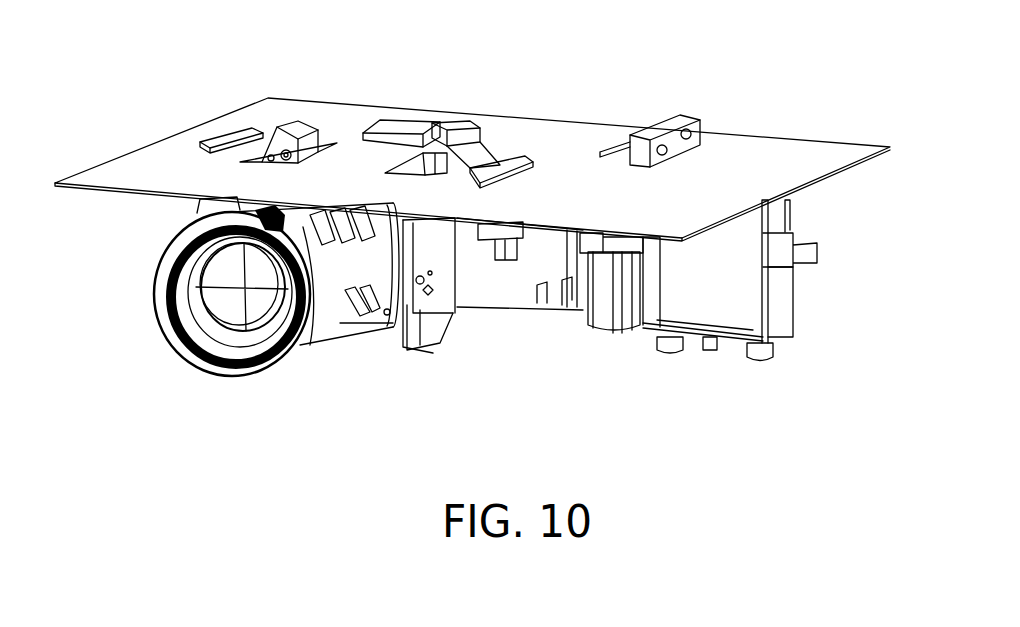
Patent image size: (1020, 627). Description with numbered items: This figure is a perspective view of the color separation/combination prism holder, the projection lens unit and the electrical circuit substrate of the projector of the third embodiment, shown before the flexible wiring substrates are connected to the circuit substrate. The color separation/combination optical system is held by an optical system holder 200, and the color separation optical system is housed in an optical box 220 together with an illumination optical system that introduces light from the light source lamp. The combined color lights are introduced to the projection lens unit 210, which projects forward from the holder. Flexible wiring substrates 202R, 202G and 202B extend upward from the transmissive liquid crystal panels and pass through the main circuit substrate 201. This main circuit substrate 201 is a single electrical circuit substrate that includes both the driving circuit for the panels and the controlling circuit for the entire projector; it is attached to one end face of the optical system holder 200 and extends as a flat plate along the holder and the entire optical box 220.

The main circuit substrate 201 is at (537, 125).
The flexible wiring substrate 202R is at (295, 123).
The flexible wiring substrate 202G is at (405, 130).
The flexible wiring substrate 202B is at (482, 148).
The projection lens unit 210 is at (305, 335).
The optical system holder 200 is at (400, 323).
The optical box 220 is at (490, 260).